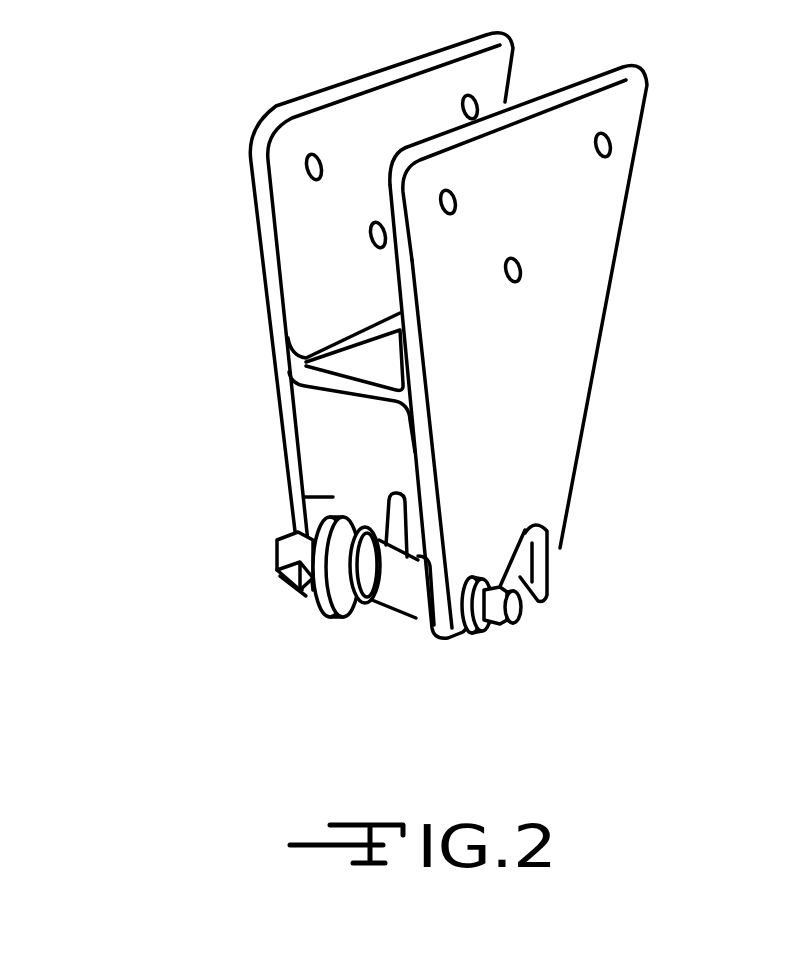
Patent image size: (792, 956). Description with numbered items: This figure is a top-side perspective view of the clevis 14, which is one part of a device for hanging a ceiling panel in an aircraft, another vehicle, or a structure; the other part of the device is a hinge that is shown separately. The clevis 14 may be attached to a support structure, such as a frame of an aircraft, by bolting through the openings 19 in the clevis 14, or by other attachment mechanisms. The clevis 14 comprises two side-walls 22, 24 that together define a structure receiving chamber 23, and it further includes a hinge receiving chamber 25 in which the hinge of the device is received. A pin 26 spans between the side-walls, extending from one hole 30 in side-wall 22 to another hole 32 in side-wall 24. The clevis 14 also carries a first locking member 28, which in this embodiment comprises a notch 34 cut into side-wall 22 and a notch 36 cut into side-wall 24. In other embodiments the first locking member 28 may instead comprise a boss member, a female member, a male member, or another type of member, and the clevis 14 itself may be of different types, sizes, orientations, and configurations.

The clevis 14 is at (203, 157).
The openings 19 is at (377, 225).
The side-wall 22 is at (260, 240).
The structure receiving chamber 23 is at (542, 78).
The side-wall 24 is at (557, 403).
The hinge receiving chamber 25 is at (273, 537).
The pin 26 is at (393, 593).
The first locking member 28 is at (394, 492).
The hole 30 is at (303, 583).
The hole 32 is at (468, 637).
The notch 34 is at (388, 525).
The notch 36 is at (533, 545).